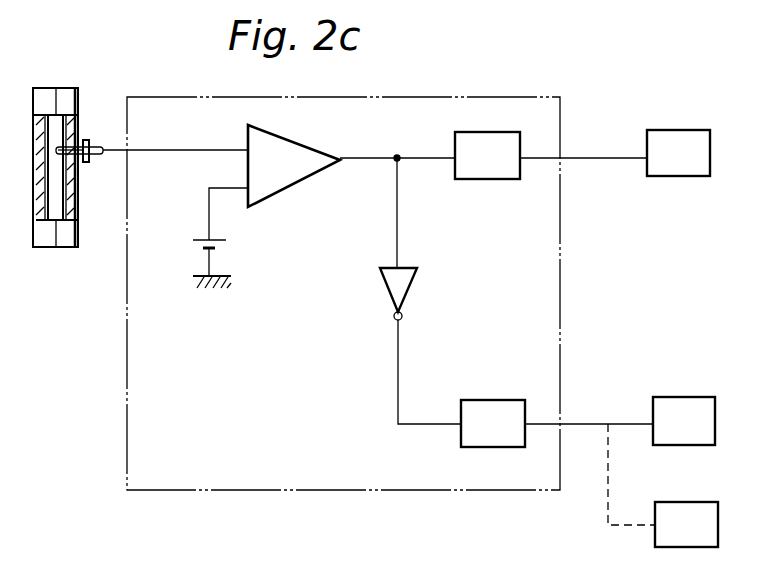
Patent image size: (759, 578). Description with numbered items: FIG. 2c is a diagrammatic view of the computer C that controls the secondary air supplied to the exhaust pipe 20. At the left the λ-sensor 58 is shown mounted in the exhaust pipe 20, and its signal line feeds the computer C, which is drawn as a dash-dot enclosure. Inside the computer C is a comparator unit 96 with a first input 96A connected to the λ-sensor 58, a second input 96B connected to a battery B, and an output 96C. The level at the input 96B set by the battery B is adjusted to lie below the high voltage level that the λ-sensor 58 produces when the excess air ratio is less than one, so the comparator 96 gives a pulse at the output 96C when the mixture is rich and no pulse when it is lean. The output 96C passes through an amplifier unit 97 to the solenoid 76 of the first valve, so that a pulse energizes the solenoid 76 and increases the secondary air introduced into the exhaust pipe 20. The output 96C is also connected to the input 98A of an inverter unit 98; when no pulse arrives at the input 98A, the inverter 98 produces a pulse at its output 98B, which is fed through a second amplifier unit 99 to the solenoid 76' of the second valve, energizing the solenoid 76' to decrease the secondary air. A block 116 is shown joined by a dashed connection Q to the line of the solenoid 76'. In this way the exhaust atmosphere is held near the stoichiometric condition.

The exhaust pipe 20 is at (80, 183).
The λ-sensor 58 is at (95, 130).
The comparator unit 96 is at (282, 143).
The input 96A is at (244, 150).
The input 96B is at (232, 189).
The output 96C is at (364, 161).
The amplifier unit 97 is at (487, 155).
The solenoid 76 is at (678, 153).
The inverter unit 98 is at (405, 290).
The input 98A is at (398, 243).
The output 98B is at (399, 338).
The amplifier unit 99 is at (493, 423).
The solenoid 76' is at (684, 421).
The device 116 is at (686, 524).
The battery B is at (195, 264).
The computer C is at (460, 97).
The connection Q is at (626, 528).